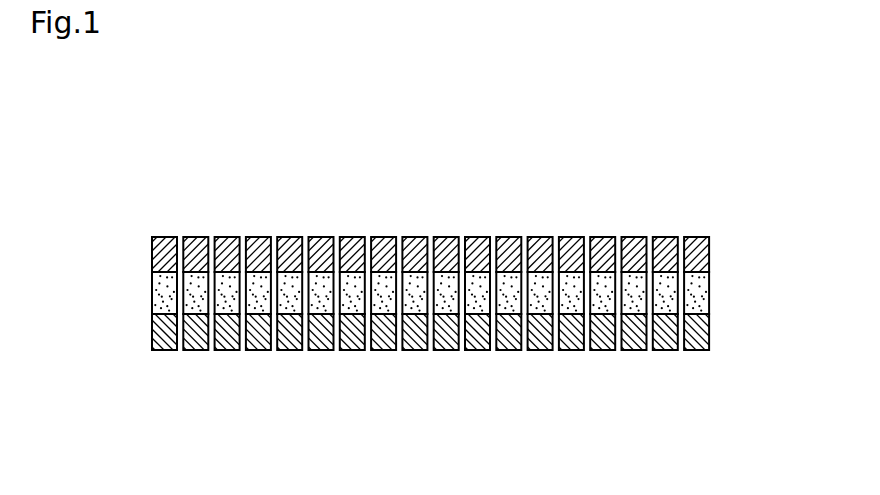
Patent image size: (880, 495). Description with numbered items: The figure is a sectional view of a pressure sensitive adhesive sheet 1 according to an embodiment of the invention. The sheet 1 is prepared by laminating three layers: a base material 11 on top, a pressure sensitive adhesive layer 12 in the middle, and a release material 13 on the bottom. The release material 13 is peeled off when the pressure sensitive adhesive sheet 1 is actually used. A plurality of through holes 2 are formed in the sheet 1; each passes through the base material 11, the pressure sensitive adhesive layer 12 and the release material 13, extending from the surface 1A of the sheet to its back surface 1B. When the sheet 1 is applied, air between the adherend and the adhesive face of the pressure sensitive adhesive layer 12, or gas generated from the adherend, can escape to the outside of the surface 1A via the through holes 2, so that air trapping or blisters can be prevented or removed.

The pressure sensitive adhesive sheet 1 is at (653, 185).
The surface 1A is at (228, 237).
The back surface 1B is at (222, 350).
The through holes 2 is at (401, 237).
The base material 11 is at (709, 254).
The pressure sensitive adhesive layer 12 is at (709, 289).
The release material 13 is at (709, 333).